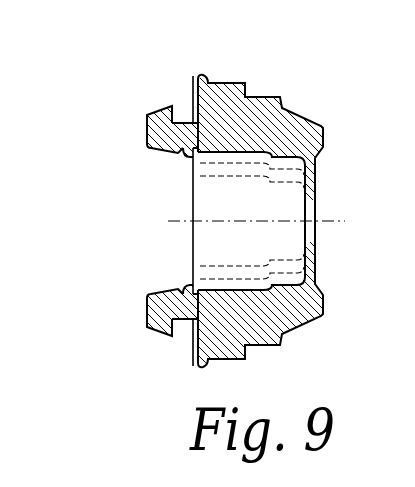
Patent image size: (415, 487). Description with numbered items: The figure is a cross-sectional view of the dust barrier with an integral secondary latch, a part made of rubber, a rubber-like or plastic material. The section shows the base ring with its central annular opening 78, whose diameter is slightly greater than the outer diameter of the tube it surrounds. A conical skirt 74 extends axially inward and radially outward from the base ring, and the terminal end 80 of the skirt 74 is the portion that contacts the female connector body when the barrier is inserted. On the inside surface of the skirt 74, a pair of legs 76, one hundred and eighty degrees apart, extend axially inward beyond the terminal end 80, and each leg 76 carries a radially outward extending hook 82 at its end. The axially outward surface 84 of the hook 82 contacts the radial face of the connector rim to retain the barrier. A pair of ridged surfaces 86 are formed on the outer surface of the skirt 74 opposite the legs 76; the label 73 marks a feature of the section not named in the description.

The shoulder 73 is at (325, 128).
The skirt 74 is at (298, 110).
The legs 76 is at (181, 152).
The central annular opening 78 is at (312, 198).
The terminal end 80 is at (193, 76).
The hook 82 is at (146, 115).
The axially outward surface 84 is at (177, 108).
The ridged surfaces 86 is at (264, 97).